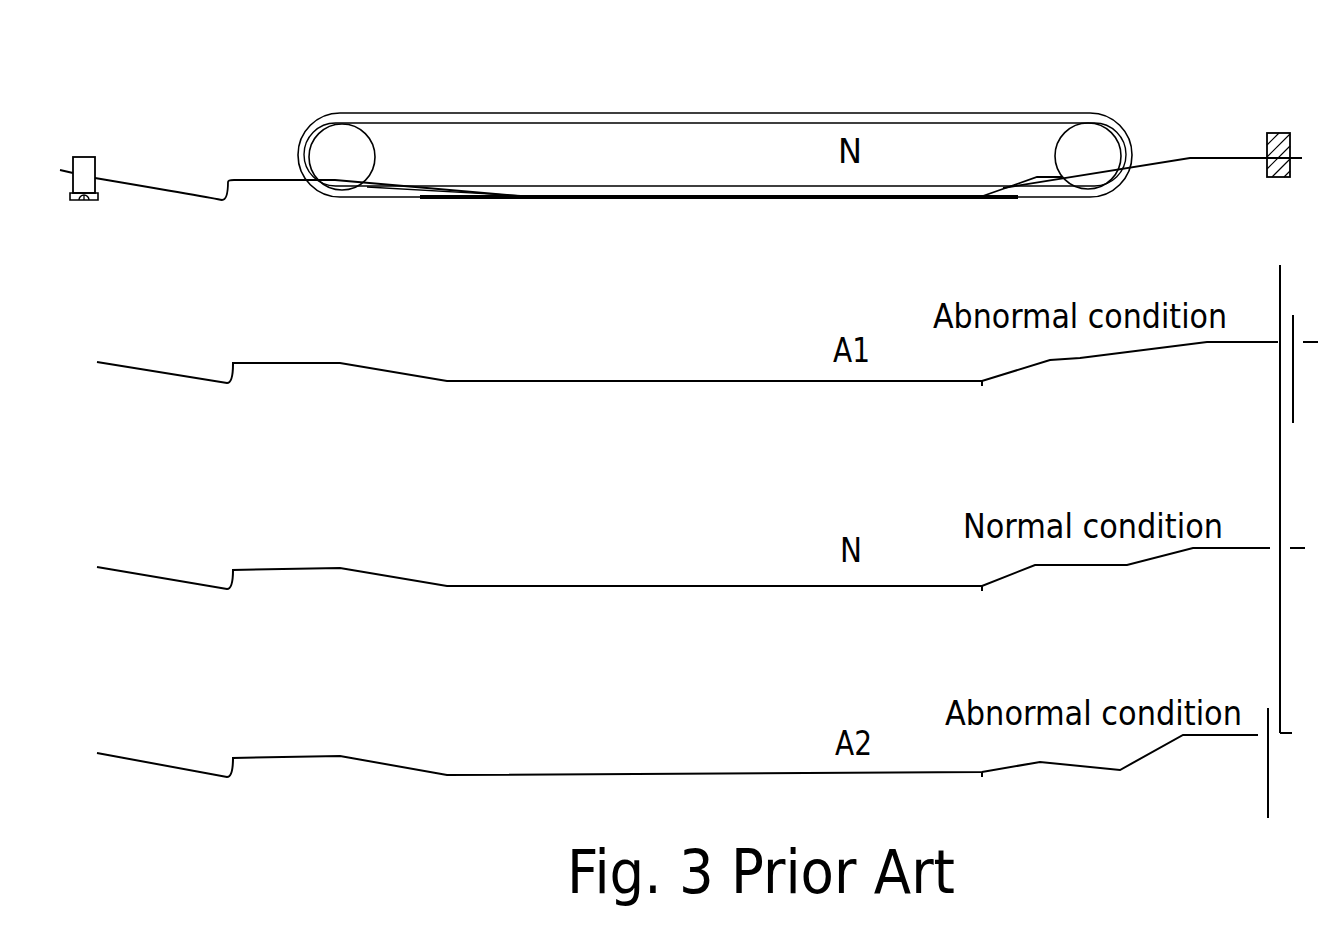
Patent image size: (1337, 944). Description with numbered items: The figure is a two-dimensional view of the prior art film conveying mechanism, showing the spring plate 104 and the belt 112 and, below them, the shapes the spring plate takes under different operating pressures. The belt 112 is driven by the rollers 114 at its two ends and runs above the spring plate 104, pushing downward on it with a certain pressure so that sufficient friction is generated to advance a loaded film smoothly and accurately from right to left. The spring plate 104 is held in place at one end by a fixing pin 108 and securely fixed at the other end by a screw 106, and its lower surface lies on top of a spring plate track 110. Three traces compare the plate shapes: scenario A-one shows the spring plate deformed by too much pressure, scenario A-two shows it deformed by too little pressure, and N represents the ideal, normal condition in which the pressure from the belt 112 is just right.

The spring plate 104 is at (210, 200).
The screw 106 is at (90, 157).
The fixing pin 108 is at (1280, 133).
The spring plate track 110 is at (937, 198).
The belt 112 is at (717, 113).
The rollers 114 is at (348, 168).